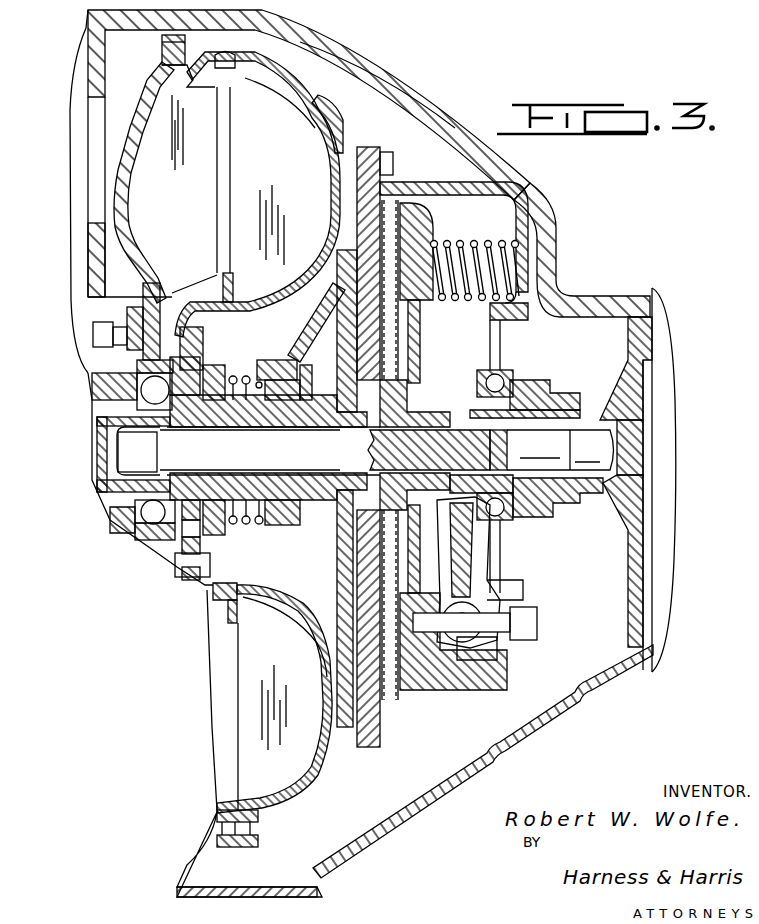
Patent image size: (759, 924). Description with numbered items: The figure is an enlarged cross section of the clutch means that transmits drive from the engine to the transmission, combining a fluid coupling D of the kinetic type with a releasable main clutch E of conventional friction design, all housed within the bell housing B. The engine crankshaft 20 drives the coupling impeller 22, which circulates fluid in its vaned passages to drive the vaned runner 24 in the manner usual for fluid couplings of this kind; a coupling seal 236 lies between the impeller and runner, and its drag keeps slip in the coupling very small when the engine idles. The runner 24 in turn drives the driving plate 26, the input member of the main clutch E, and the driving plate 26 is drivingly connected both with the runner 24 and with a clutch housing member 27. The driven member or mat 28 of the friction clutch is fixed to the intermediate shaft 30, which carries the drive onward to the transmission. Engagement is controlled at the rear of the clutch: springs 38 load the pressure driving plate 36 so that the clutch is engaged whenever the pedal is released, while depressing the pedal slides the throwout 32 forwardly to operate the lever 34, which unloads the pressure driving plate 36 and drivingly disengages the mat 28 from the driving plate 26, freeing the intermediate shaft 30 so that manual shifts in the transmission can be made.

The fluid coupling D is at (293, 72).
The bell housing B is at (383, 80).
The main clutch E is at (433, 187).
The engine crankshaft 20 is at (93, 388).
The coupling impeller 22 is at (179, 184).
The vaned runner 24 is at (281, 182).
The driving plate 26 is at (367, 747).
The clutch housing member 27 is at (520, 222).
The mat 28 is at (413, 214).
The intermediate shaft 30 is at (552, 458).
The throwout 32 is at (537, 380).
The lever 34 is at (493, 560).
The pressure driving plate 36 is at (493, 688).
The springs 38 is at (493, 235).
The coupling seal 236 is at (230, 367).